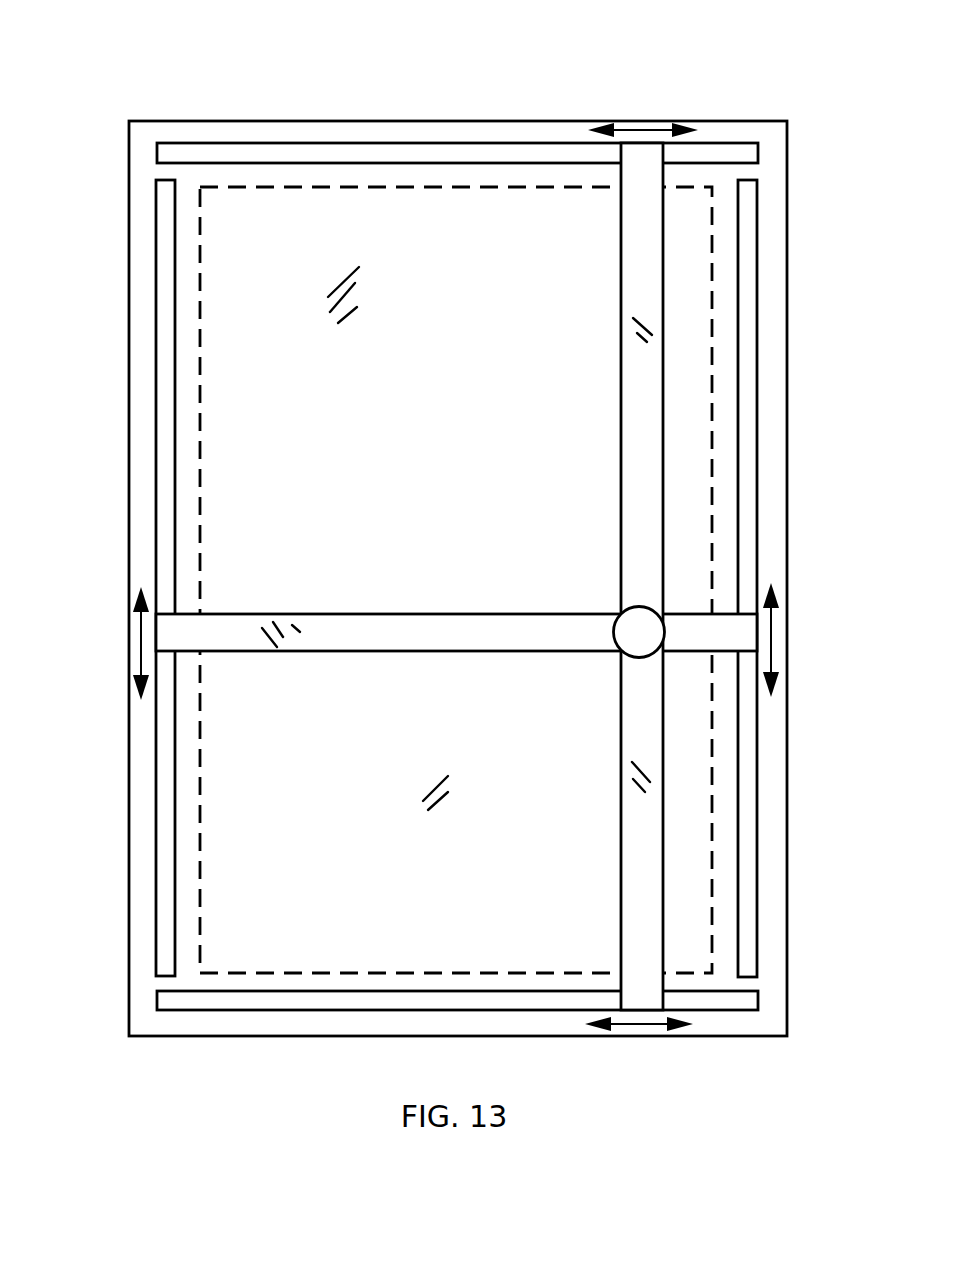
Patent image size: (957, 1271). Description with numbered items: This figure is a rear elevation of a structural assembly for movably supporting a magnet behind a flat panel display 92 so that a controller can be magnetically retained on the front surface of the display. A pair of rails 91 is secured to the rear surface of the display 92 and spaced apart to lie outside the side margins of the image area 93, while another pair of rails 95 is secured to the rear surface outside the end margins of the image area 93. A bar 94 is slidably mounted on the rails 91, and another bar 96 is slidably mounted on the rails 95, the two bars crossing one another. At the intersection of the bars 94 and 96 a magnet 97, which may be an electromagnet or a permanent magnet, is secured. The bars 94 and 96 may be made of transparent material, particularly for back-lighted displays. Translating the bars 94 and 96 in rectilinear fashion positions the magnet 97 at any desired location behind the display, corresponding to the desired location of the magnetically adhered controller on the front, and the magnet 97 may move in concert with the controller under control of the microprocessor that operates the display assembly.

The rails 91 is at (157, 245).
The flat panel display 92 is at (128, 515).
The image area 93 is at (267, 187).
The bar 94 is at (417, 629).
The rails 95 is at (363, 143).
The bar 96 is at (637, 247).
The magnet 97 is at (637, 632).